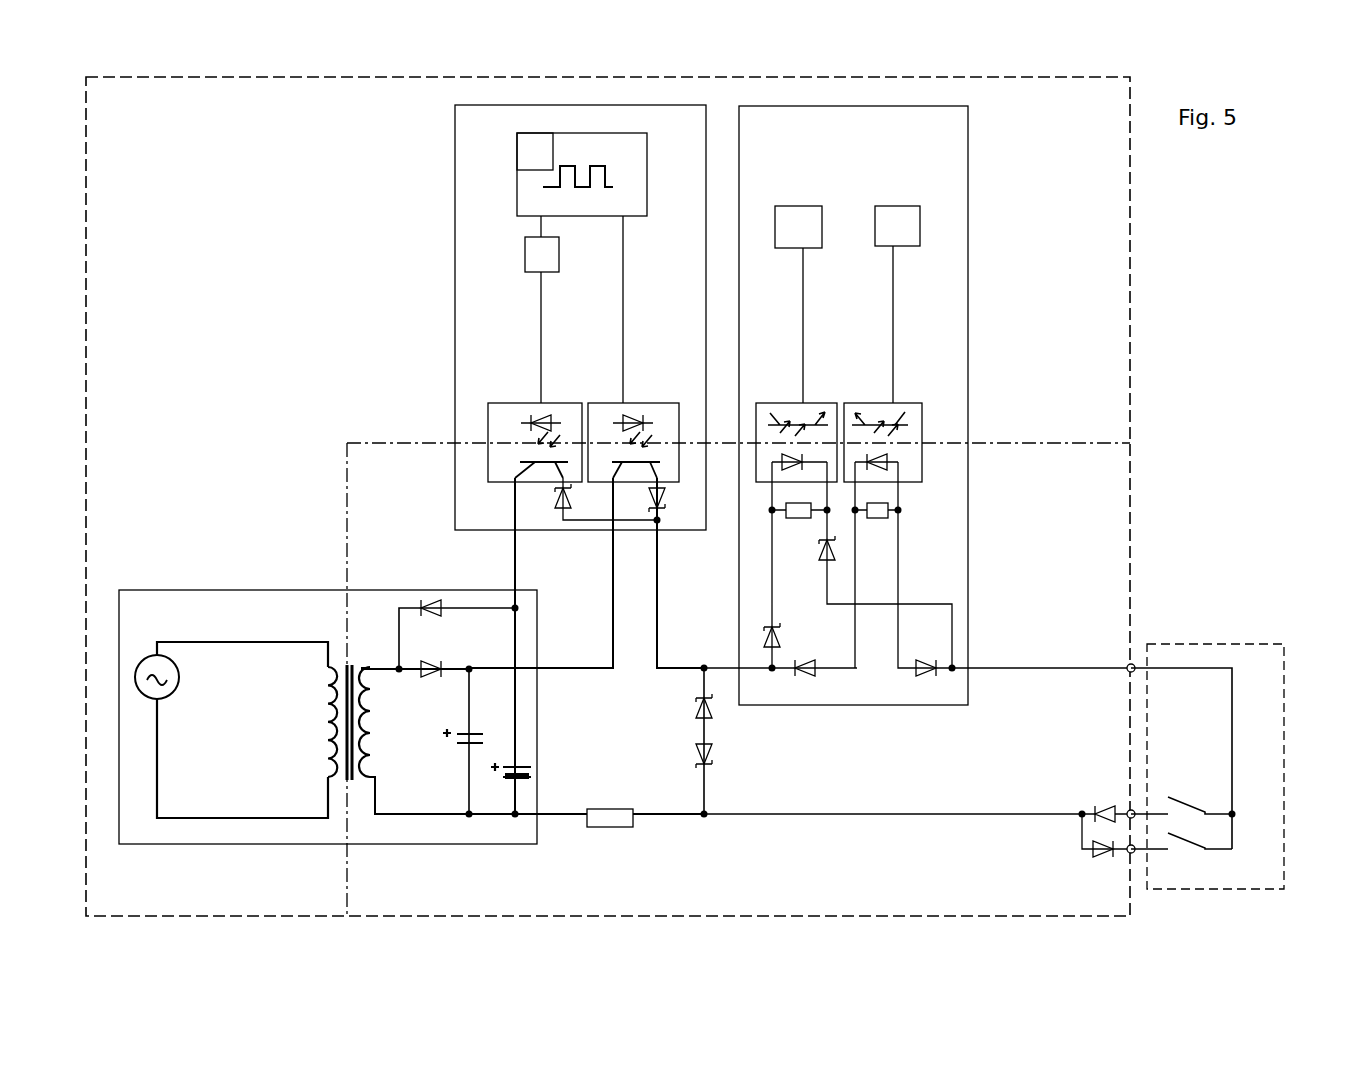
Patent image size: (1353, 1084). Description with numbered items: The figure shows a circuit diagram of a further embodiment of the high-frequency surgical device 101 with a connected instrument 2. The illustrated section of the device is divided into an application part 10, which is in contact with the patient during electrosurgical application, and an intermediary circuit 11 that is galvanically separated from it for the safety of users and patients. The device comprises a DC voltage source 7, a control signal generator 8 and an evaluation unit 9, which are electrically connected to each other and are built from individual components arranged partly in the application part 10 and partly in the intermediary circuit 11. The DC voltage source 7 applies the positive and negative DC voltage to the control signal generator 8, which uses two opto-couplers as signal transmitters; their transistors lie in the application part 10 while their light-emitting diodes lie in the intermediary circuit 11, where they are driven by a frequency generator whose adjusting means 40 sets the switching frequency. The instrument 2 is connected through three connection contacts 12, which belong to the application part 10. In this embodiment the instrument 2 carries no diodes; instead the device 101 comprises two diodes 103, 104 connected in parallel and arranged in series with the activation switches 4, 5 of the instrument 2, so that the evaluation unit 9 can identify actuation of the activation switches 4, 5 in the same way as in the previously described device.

The HF surgical device 101 is at (1132, 338).
The intermediary circuit 11 is at (1096, 436).
The application part 10 is at (1104, 492).
The control signal generator 8 is at (593, 459).
The adjusting means 40 is at (548, 164).
The evaluation unit 9 is at (968, 245).
The DC voltage source 7 is at (170, 588).
The diode 103 is at (1104, 804).
The diode 104 is at (1092, 855).
The connection contacts 12 is at (1135, 662).
The instrument 2 is at (1236, 767).
The activation switch 4 is at (1180, 800).
The activation switch 5 is at (1190, 842).